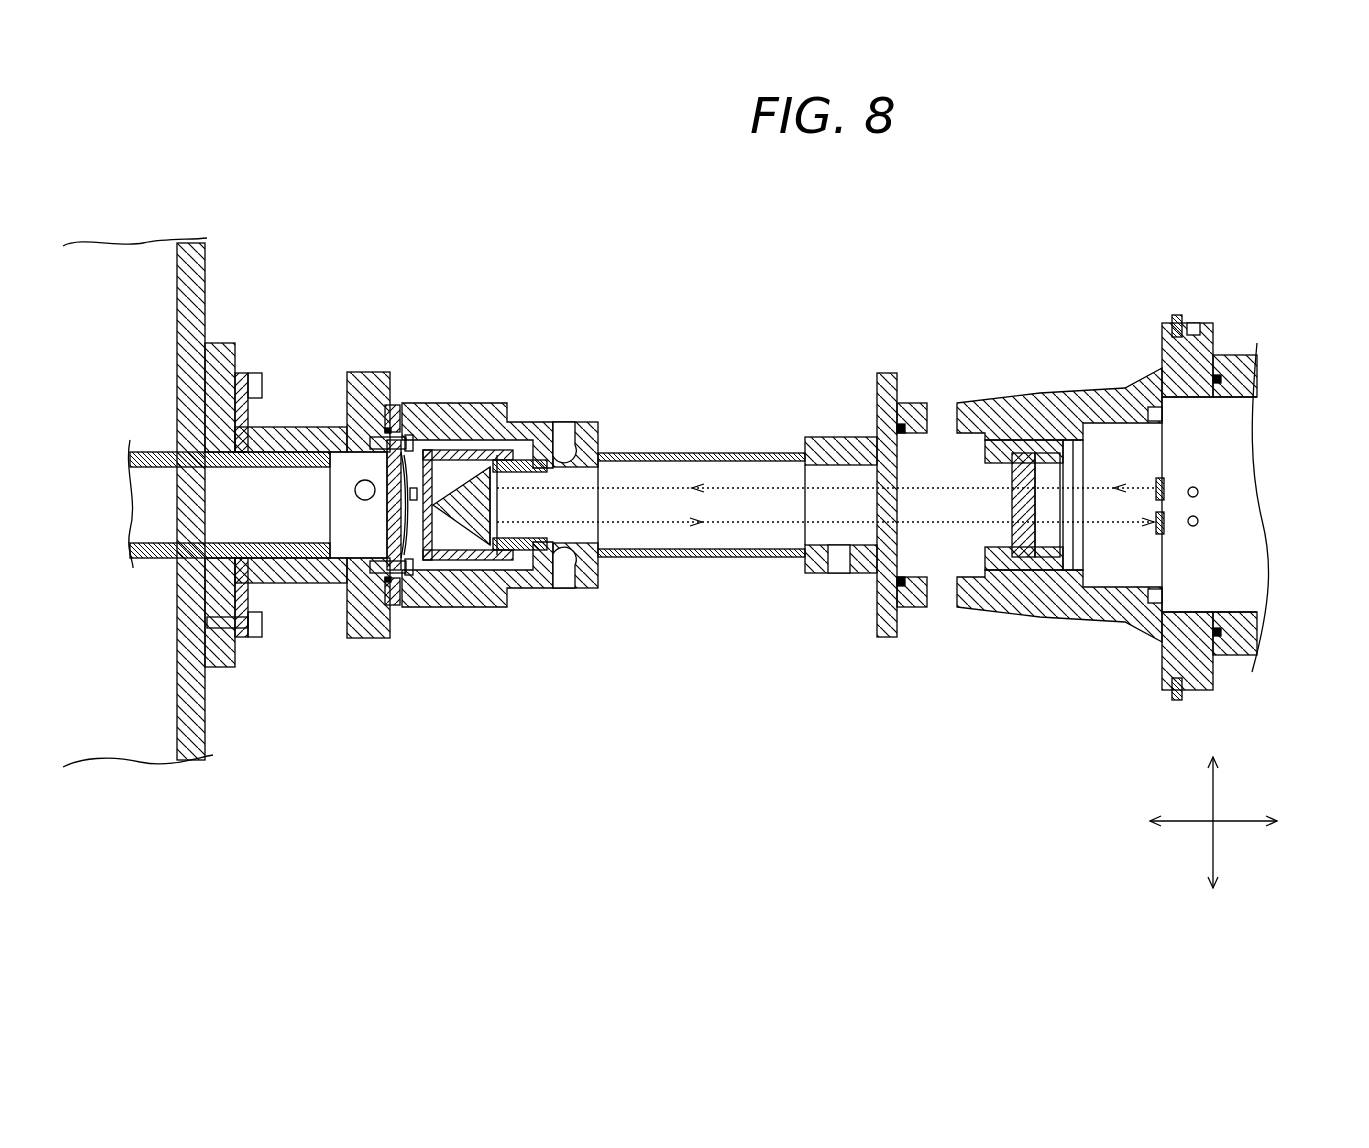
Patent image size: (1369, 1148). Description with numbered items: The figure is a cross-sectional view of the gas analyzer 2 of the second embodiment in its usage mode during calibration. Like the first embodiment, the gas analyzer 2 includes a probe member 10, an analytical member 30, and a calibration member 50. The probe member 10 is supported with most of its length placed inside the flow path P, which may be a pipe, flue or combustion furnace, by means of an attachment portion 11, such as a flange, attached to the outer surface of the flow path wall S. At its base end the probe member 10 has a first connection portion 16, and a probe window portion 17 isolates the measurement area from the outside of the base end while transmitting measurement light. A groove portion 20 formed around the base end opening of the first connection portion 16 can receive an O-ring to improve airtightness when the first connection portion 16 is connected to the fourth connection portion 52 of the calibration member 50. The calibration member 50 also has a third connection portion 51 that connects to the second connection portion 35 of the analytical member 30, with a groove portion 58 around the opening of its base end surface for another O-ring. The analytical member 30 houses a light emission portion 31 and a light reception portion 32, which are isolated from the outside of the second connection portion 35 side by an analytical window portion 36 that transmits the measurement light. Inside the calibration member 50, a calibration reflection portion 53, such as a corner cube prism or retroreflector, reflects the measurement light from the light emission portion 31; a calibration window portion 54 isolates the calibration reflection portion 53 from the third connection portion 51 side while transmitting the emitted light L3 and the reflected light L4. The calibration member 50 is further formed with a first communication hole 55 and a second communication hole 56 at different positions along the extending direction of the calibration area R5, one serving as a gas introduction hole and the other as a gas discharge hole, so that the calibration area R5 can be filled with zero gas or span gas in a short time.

The gas analyzer 2 is at (1057, 222).
The probe member 10 is at (340, 355).
The attachment portion 11 is at (217, 343).
The first connection portion 16 is at (393, 370).
The probe window portion 17 is at (387, 515).
The groove portion 20 is at (385, 427).
The analytical member 30 is at (1117, 390).
The light emission portion 31 is at (1158, 484).
The light reception portion 32 is at (1158, 523).
The second connection portion 35 is at (903, 402).
The analytical window portion 36 is at (1048, 440).
The calibration member 50 is at (743, 440).
The third connection portion 51 is at (897, 638).
The fourth connection portion 52 is at (395, 610).
The calibration reflection portion 53 is at (490, 484).
The calibration window portion 54 is at (885, 500).
The first communication hole 55 is at (833, 572).
The second communication hole 56 is at (573, 462).
The groove portion 58 is at (878, 424).
The flow path P is at (140, 314).
The flow path wall S is at (205, 715).
The emitted light L3 is at (652, 487).
The reflected light L4 is at (652, 522).
The calibration area R5 is at (760, 516).